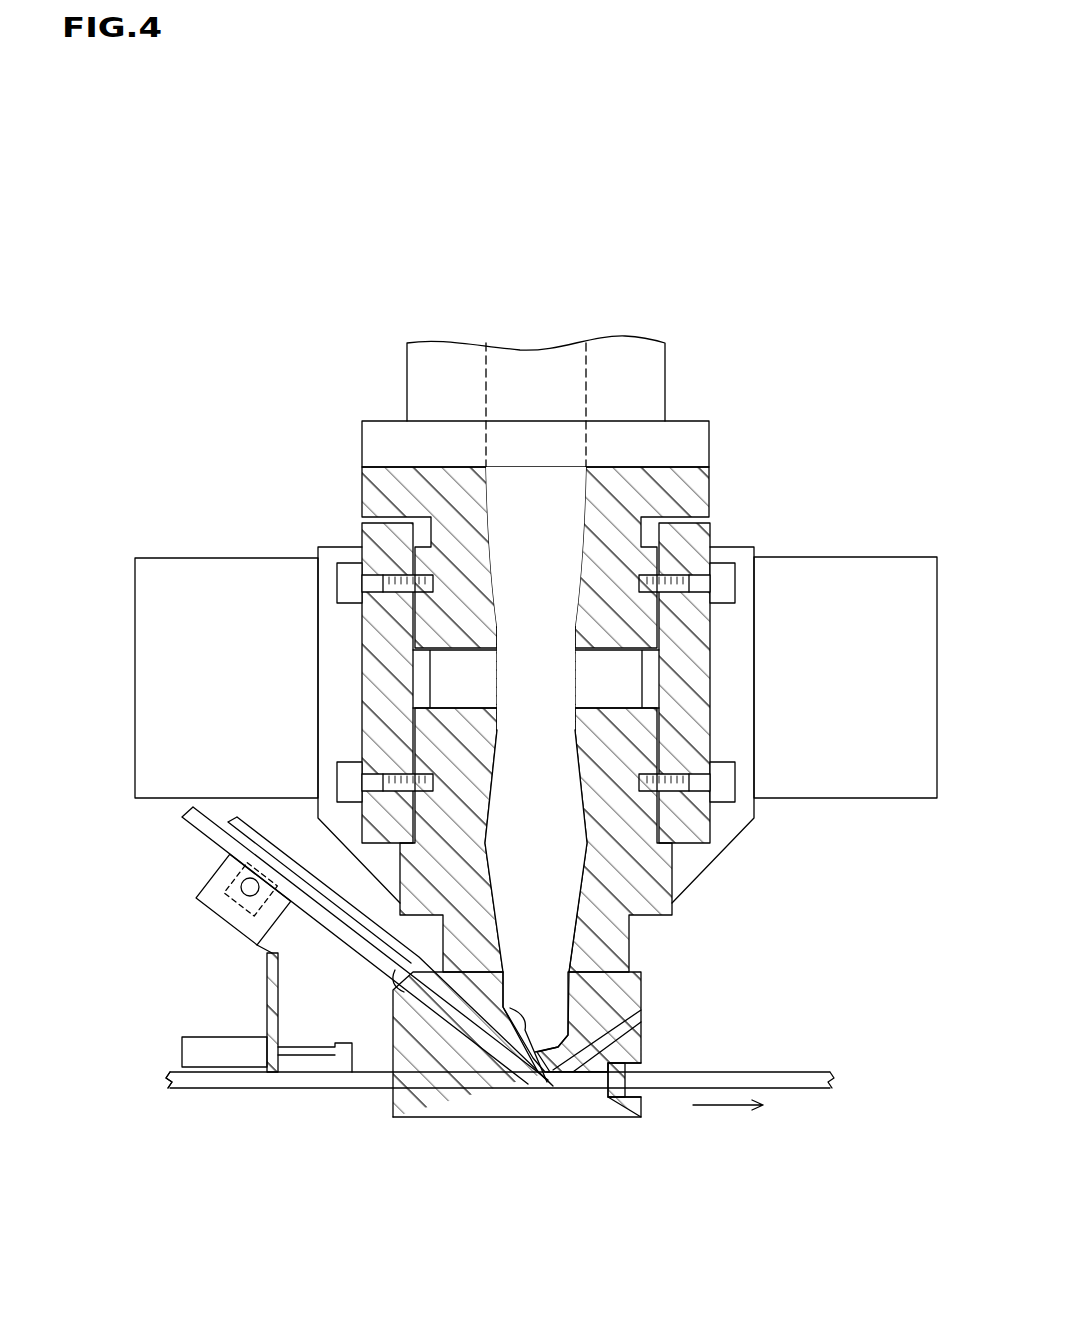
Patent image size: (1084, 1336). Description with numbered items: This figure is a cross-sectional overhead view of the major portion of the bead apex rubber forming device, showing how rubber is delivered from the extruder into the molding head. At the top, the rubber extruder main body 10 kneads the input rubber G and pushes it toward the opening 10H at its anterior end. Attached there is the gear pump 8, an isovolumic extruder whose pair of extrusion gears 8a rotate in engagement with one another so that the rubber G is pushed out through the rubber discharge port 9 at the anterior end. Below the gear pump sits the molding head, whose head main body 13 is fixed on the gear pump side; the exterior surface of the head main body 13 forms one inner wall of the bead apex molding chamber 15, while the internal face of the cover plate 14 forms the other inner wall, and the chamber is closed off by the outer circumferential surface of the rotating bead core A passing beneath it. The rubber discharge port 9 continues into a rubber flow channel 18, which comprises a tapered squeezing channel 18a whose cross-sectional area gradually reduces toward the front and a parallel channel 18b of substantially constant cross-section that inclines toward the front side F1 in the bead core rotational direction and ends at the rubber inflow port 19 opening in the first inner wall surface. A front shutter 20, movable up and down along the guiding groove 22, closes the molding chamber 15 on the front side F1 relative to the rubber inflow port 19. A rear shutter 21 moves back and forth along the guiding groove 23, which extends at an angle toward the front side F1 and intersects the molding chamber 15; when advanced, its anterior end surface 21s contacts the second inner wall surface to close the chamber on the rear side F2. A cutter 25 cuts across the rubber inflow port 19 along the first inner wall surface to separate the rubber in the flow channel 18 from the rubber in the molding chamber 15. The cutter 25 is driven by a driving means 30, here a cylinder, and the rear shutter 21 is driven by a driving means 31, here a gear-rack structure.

The gear pump 8 is at (750, 468).
The extrusion gears 8a is at (562, 683).
The rubber discharge port 9 is at (545, 975).
The rubber extruder main body 10 is at (667, 372).
The opening 10H is at (533, 470).
The head main body 13 is at (641, 1002).
The cover plate 14 is at (621, 1117).
The bead apex molding chamber 15 is at (575, 1080).
The rubber flow channel 18 is at (528, 1190).
The squeezing channel 18a is at (510, 1015).
The parallel channel 18b is at (523, 1083).
The rubber inflow port 19 is at (552, 1070).
The front shutter 20 is at (630, 1062).
The rear shutter 21 is at (413, 1020).
The anterior end surface 21s is at (551, 1087).
The guiding groove 22 is at (643, 1093).
The guiding groove 23 is at (405, 978).
The cutter 25 is at (380, 1076).
The driving means 30 is at (182, 1043).
The driving means 31 is at (228, 916).
The unvulcanized rubber G is at (548, 847).
The bead core A is at (793, 1080).
The front side F1 is at (892, 1093).
The rear side F2 is at (150, 1093).